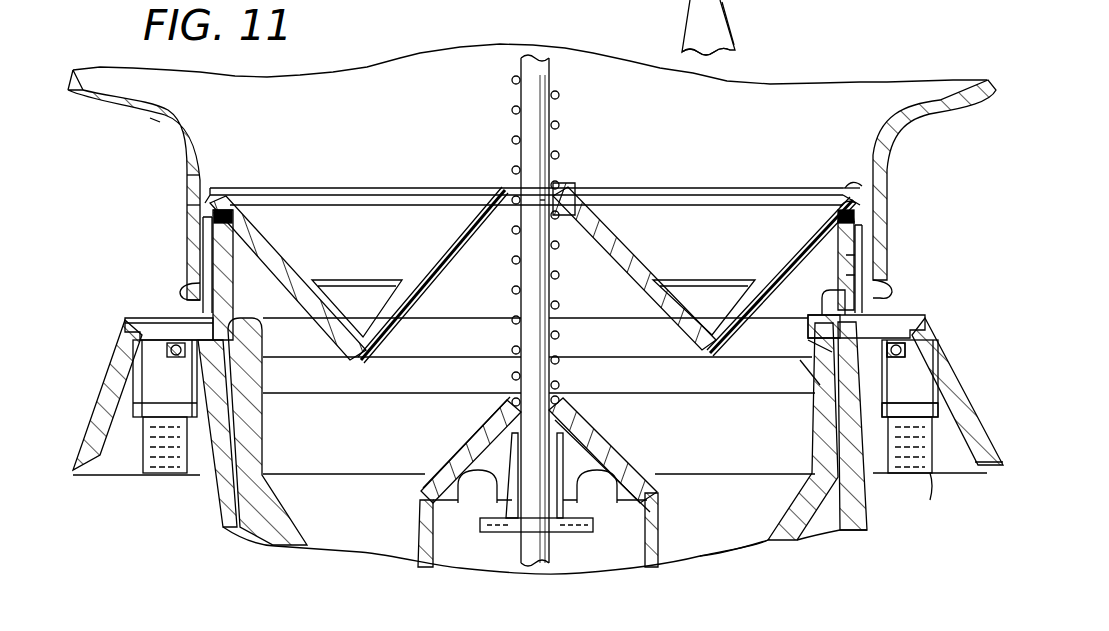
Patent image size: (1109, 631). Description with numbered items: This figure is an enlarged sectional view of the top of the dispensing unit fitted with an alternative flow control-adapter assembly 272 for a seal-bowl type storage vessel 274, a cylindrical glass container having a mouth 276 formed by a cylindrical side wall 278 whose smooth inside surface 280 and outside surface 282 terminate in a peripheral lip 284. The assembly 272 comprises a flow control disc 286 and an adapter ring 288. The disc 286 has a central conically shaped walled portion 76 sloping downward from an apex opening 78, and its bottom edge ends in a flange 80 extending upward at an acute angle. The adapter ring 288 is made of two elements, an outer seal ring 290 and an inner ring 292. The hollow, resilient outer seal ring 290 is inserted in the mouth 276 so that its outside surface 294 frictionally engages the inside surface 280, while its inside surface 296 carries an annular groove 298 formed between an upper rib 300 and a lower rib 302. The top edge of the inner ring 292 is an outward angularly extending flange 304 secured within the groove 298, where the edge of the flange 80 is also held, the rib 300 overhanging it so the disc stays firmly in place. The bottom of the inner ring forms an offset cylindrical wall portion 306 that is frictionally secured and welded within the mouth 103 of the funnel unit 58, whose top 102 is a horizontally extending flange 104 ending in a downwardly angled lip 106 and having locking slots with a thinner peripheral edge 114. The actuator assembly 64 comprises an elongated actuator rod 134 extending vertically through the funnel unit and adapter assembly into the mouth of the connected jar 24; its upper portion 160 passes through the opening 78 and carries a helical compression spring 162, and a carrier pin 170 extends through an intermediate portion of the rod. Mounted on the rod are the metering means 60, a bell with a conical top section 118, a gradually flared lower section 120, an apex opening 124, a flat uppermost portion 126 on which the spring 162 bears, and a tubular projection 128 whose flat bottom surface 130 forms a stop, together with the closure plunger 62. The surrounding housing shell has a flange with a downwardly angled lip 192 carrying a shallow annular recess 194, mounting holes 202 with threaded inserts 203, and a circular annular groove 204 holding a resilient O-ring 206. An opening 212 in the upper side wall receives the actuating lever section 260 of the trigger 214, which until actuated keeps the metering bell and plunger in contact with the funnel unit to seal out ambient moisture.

The jar 24 is at (134, 126).
The funnel unit 58 is at (784, 513).
The metering means 60 is at (458, 452).
The closure means 62 is at (586, 424).
The actuator assembly 64 is at (516, 371).
The central conically shaped walled portion 76 is at (600, 235).
The opening 78 is at (562, 185).
The flange 80 is at (790, 275).
The top 102 is at (828, 308).
The mouth of the funnel 103 is at (808, 374).
The horizontally extending flange 104 is at (920, 330).
The lip 106 is at (952, 365).
The peripheral edge 114 is at (170, 318).
The conical top section 118 is at (605, 455).
The gradually flared lower section 120 is at (420, 512).
The opening 124 is at (505, 412).
The uppermost portion 126 is at (562, 398).
The tubular projection 128 is at (500, 505).
The bottom surface 130 is at (505, 533).
The actuator rod 134 is at (542, 285).
The upper portion 160 is at (530, 86).
The helical compression spring 162 is at (512, 291).
The carrier pin 170 is at (565, 533).
The lip 192 is at (990, 475).
The annular recess 194 is at (135, 480).
The mounting holes 202 is at (210, 480).
The threaded inserts 203 is at (190, 405).
The circular annular groove 204 is at (898, 362).
The resilient O-ring 206 is at (890, 396).
The opening 212 is at (686, 8).
The trigger 214 is at (747, 20).
The actuating lever section 260 is at (730, 46).
The flow control-adapter assembly 272 is at (242, 187).
The seal-bowl type storage vessel 274 is at (897, 112).
The mouth 276 is at (212, 145).
The cylindrical side wall 278 is at (193, 180).
The inside surface 280 is at (203, 255).
The outside surface 282 is at (185, 205).
The peripheral lip 284 is at (180, 292).
The flow control disc 286 is at (645, 308).
The adapter ring 288 is at (874, 245).
The outer seal ring 290 is at (866, 266).
The inner ring 292 is at (893, 283).
The outside surface 294 is at (866, 215).
The inside surface 296 is at (846, 248).
The annular groove 298 is at (862, 193).
The upper rib 300 is at (862, 186).
The lower rib 302 is at (212, 228).
The outward angularly extending flange 304 is at (852, 203).
The offset cylindrical wall portion 306 is at (814, 346).